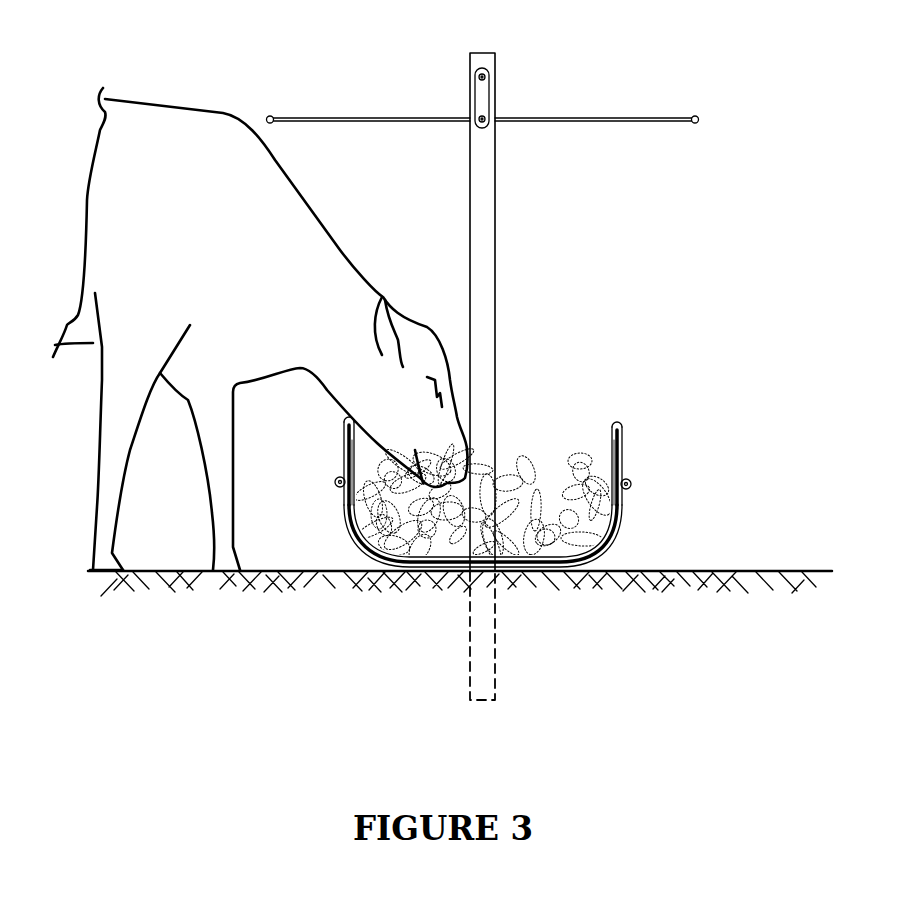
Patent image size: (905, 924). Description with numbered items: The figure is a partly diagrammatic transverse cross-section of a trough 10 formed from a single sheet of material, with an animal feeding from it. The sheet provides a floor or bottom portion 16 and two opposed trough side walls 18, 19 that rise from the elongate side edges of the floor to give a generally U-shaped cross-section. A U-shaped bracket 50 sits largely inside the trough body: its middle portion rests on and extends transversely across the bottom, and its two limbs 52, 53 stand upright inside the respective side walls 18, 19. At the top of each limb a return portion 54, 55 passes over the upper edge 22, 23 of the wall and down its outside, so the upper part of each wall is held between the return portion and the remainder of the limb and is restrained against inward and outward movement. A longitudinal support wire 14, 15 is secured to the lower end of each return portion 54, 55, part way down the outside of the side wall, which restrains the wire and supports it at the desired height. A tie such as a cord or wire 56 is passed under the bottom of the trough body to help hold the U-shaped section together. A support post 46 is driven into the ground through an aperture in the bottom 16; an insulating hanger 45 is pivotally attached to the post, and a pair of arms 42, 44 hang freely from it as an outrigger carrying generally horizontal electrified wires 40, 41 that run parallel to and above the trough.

The trough 10 is at (527, 464).
The longitudinal support 14 is at (338, 484).
The longitudinal support 15 is at (633, 484).
The floor or bottom portion 16 is at (548, 567).
The trough side wall 18 is at (343, 455).
The trough side wall 19 is at (625, 438).
The upper edge 22 is at (351, 446).
The upper edge 23 is at (628, 433).
The electrified wire 40 is at (498, 67).
The electrified wire 41 is at (695, 116).
The outrigger arm 42 is at (578, 118).
The outrigger arm 44 is at (322, 117).
The insulating hanger 45 is at (483, 98).
The support post 46 is at (497, 222).
The U-shaped bracket 50 is at (592, 442).
The limb 52 is at (355, 445).
The limb 53 is at (608, 438).
The return portion 54 is at (343, 468).
The return portion 55 is at (623, 453).
The tie 56 is at (618, 530).